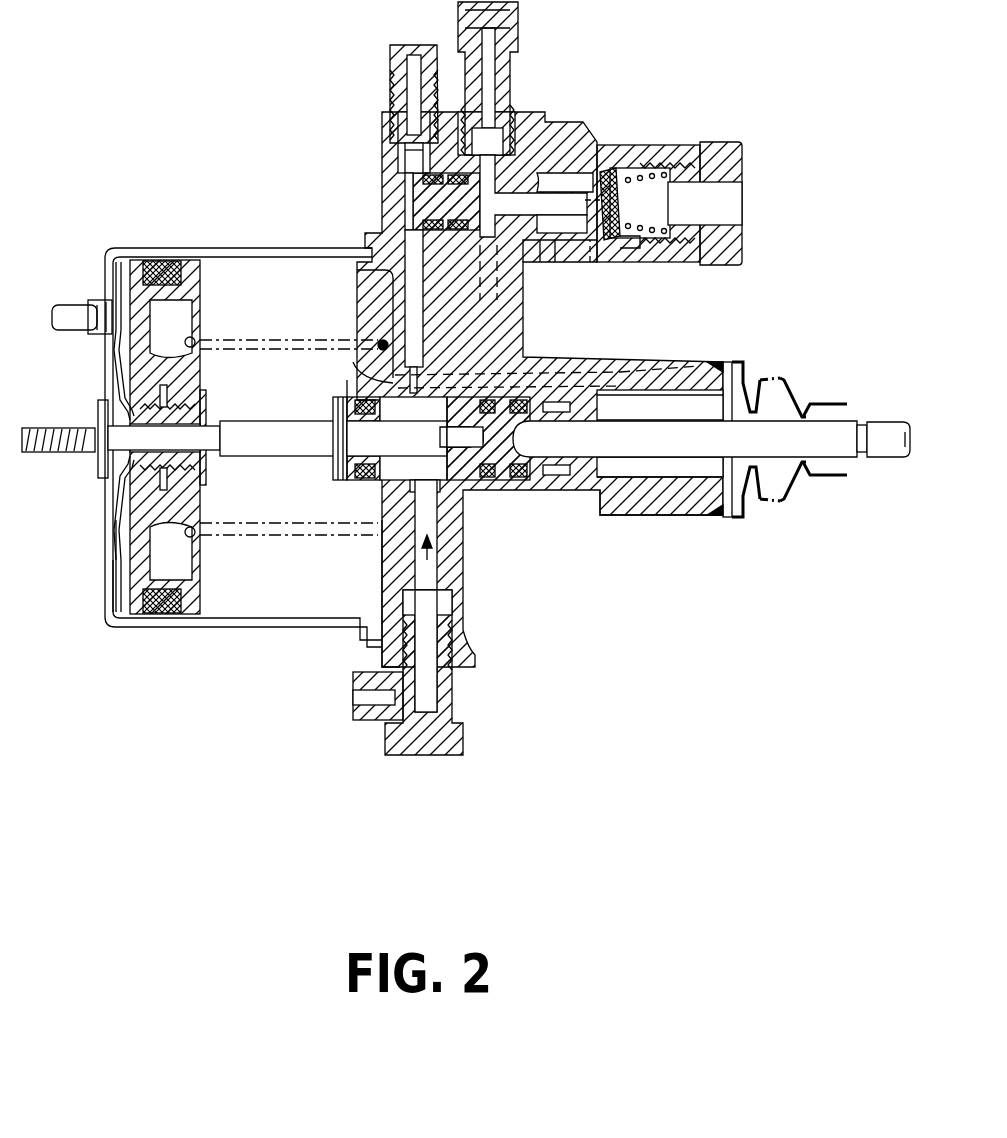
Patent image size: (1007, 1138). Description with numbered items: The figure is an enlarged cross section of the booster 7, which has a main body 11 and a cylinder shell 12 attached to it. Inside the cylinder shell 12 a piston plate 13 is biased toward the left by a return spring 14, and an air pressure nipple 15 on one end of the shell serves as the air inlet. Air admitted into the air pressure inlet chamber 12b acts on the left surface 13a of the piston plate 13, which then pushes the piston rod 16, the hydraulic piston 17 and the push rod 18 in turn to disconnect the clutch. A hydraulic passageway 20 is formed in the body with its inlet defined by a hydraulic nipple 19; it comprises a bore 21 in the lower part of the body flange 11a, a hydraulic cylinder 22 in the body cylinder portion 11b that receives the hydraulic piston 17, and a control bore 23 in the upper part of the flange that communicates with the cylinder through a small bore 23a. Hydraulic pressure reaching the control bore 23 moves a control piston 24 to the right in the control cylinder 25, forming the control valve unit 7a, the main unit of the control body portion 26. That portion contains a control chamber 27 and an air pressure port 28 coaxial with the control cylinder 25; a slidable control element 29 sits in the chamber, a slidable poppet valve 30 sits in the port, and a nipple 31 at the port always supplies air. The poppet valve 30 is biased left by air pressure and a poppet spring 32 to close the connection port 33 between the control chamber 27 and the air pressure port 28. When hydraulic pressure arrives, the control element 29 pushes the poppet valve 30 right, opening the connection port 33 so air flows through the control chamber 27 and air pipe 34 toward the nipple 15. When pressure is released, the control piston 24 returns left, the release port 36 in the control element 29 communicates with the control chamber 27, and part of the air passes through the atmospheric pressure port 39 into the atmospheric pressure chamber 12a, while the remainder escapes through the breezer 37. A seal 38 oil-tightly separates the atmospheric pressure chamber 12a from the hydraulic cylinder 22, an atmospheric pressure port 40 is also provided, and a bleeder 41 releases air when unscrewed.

The booster 7 is at (256, 106).
The control valve unit 7a is at (668, 110).
The main body 11 is at (372, 140).
The body flange 11a is at (455, 532).
The body cylinder portion 11b is at (552, 478).
The cylinder shell 12 is at (212, 248).
The atmospheric pressure chamber 12a is at (306, 592).
The air pressure inlet chamber 12b is at (112, 575).
The piston plate 13 is at (135, 357).
The left surface of piston plate 13a is at (120, 528).
The return spring 14 is at (195, 337).
The air pressure nipple 15 is at (78, 280).
The piston rod 16 is at (255, 432).
The hydraulic piston 17 is at (512, 470).
The push rod 18 is at (655, 442).
The hydraulic nipple 19 is at (368, 722).
The hydraulic passageway 20 is at (430, 558).
The bore 21 is at (440, 585).
The hydraulic cylinder 22 is at (352, 485).
The control bore 23 is at (408, 286).
The small bore 23a is at (408, 380).
The control piston 24 is at (405, 185).
The control cylinder 25 is at (405, 222).
The control body portion 26 is at (590, 86).
The control chamber 27 is at (580, 160).
The air pressure port 28 is at (700, 160).
The control element 29 is at (530, 165).
The poppet valve 30 is at (628, 168).
The nipple 31 is at (740, 160).
The poppet spring 32 is at (668, 192).
The connection port 33 is at (624, 250).
The air pipe 34 is at (592, 275).
The release port 36 is at (540, 262).
The breezer 37 is at (518, 68).
The seal 38 is at (352, 455).
The atmospheric pressure port 39 is at (452, 305).
The atmospheric pressure port 40 is at (650, 368).
The bleeder 41 is at (392, 98).